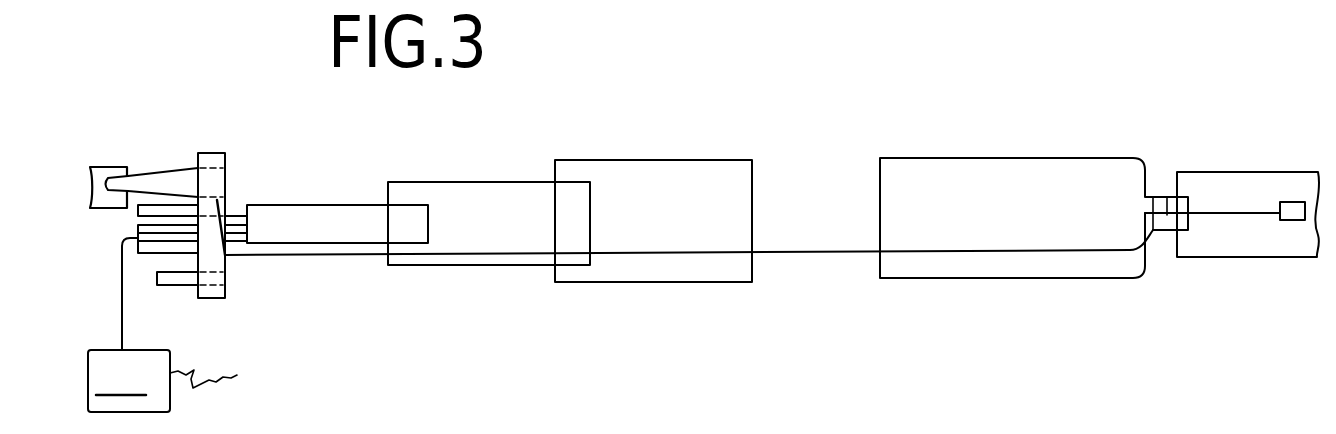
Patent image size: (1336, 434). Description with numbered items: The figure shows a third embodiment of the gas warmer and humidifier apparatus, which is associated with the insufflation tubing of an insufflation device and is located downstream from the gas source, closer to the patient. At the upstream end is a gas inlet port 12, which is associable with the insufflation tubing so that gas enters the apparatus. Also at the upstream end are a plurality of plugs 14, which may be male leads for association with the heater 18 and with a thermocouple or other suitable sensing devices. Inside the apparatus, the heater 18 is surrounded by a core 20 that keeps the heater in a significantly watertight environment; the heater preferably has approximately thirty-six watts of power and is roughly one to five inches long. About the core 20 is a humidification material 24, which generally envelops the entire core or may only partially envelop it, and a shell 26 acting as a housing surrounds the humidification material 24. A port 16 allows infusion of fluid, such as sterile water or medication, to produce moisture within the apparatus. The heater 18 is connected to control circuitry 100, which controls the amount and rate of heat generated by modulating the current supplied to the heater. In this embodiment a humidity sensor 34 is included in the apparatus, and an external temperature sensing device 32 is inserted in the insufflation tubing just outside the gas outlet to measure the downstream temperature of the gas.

The gas inlet port 12 is at (148, 170).
The plugs 14 is at (148, 255).
The port 16 is at (173, 285).
The heater 18 is at (322, 232).
The core 20 is at (513, 265).
The humidification material 24 is at (695, 160).
The shell 26 is at (1003, 270).
The external temperature sensing device 32 is at (1283, 220).
The humidity sensor 34 is at (1291, 202).
The control circuitry 100 is at (200, 325).